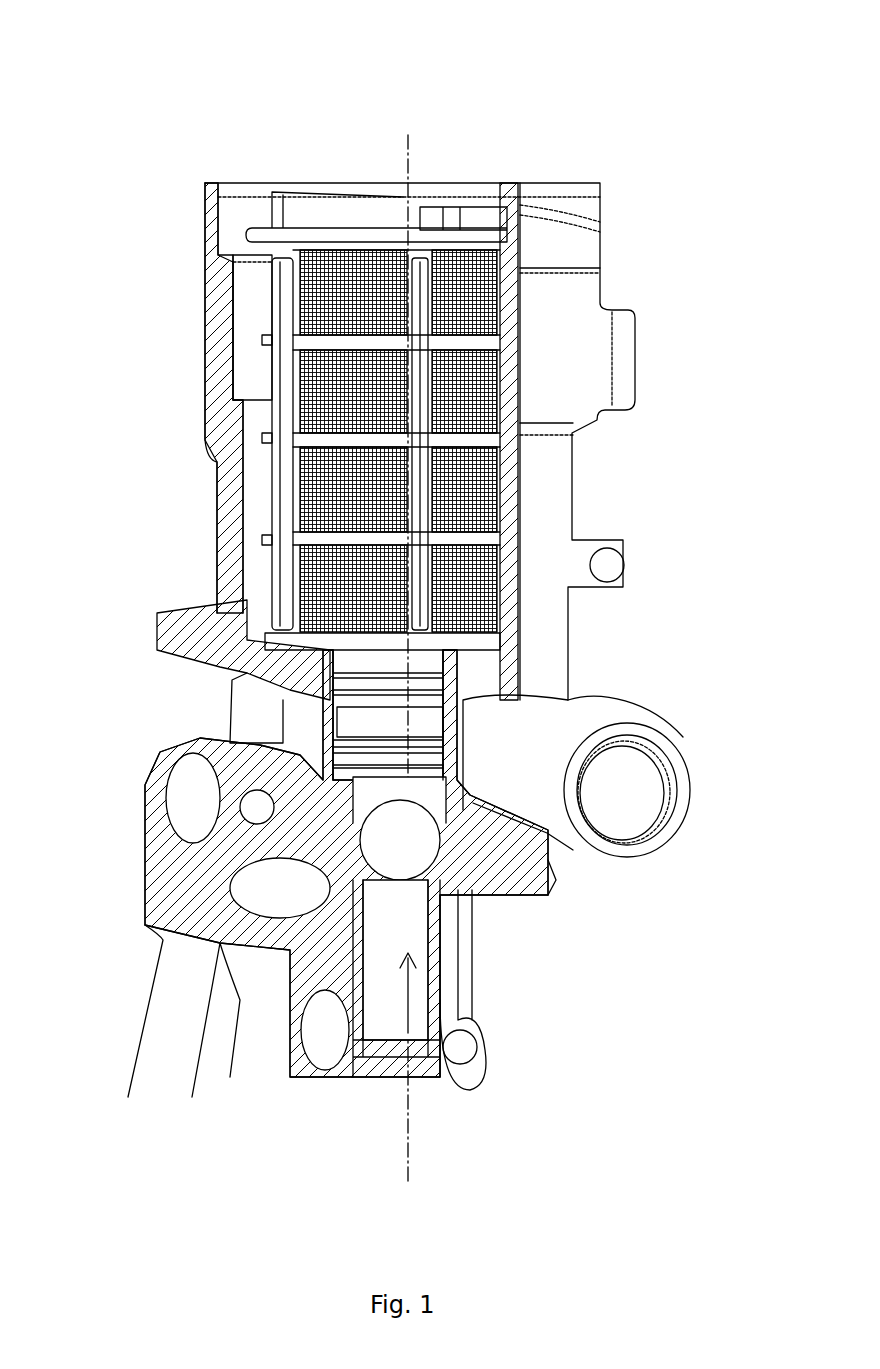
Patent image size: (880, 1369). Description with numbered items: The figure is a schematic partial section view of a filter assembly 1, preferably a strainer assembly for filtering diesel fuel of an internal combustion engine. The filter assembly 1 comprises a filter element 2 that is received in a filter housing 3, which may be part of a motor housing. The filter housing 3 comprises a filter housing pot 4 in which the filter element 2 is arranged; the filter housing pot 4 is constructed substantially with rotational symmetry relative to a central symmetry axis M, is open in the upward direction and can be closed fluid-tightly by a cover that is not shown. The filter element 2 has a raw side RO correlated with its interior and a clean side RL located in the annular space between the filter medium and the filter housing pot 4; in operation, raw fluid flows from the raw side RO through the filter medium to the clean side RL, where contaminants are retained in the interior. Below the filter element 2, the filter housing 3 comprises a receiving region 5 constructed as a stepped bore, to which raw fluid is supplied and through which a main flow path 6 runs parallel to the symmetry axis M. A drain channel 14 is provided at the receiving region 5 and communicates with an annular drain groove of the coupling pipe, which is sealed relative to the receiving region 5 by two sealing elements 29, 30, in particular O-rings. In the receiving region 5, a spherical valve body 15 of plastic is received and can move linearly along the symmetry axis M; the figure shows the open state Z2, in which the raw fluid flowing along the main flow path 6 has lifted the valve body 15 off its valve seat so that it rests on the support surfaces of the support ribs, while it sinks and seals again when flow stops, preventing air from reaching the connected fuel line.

The filter assembly 1 is at (399, 86).
The clean side RL is at (256, 303).
The filter housing pot 4 is at (200, 360).
The filter element 2 is at (268, 523).
The drain channel 14 is at (307, 716).
The valve body 15 is at (350, 855).
The filter housing 3 is at (130, 1038).
The sealing element 29 is at (440, 683).
The sealing element 30 is at (430, 758).
The open state Z2 is at (570, 878).
The receiving region 5 is at (430, 918).
The main flow path 6 is at (410, 1005).
The raw side RO is at (387, 1013).
The symmetry axis M is at (410, 1147).